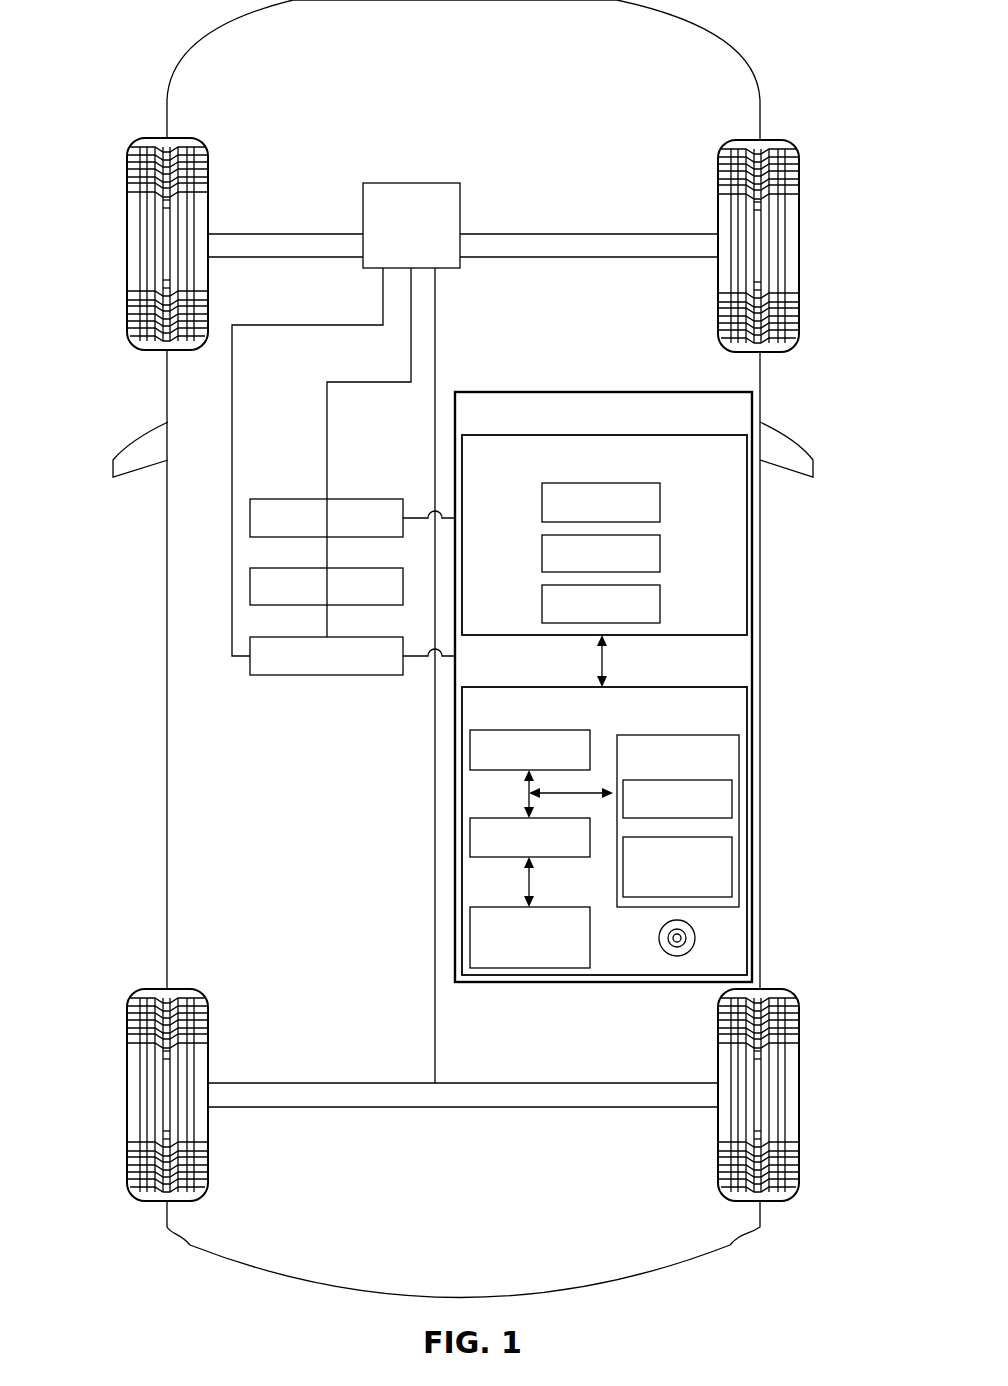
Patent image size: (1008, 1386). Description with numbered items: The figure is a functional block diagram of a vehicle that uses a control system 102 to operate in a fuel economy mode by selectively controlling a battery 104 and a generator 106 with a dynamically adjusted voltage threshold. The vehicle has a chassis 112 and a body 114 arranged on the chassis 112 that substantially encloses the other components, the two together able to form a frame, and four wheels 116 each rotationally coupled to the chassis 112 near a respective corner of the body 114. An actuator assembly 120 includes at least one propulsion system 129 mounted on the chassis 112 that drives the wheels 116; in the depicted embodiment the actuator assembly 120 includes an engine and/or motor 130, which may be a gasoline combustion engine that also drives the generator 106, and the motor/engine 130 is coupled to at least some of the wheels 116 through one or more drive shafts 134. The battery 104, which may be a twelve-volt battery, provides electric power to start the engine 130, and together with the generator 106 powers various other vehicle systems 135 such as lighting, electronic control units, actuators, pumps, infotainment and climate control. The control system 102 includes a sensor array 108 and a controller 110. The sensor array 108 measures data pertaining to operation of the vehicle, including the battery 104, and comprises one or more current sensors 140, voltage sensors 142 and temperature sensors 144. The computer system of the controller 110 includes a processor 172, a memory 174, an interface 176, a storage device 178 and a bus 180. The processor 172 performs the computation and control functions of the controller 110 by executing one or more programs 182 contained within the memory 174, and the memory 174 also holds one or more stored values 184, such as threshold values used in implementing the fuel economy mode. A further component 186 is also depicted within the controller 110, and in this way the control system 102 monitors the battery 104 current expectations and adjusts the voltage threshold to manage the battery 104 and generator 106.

The actuator assembly 120 is at (322, 118).
The body 114 is at (168, 790).
The wheels 116 is at (127, 246).
The drive shafts 134 is at (270, 234).
The propulsion system 129 is at (385, 183).
The motor/engine 130 is at (432, 256).
The chassis 112 is at (428, 1021).
The generator 106 is at (300, 499).
The vehicle systems 135 is at (300, 568).
The battery 104 is at (300, 637).
The control system 102 is at (530, 392).
The sensor array 108 is at (724, 466).
The current sensors 140 is at (660, 502).
The voltage sensors 142 is at (660, 555).
The temperature sensors 144 is at (660, 605).
The controller 110 is at (560, 687).
The processor 172 is at (470, 750).
The interface 176 is at (470, 840).
The storage device 178 is at (470, 940).
The bus 180 is at (522, 792).
The memory 174 is at (739, 750).
The program 182 is at (732, 800).
The stored values 184 is at (732, 868).
The speaker 186 is at (695, 944).